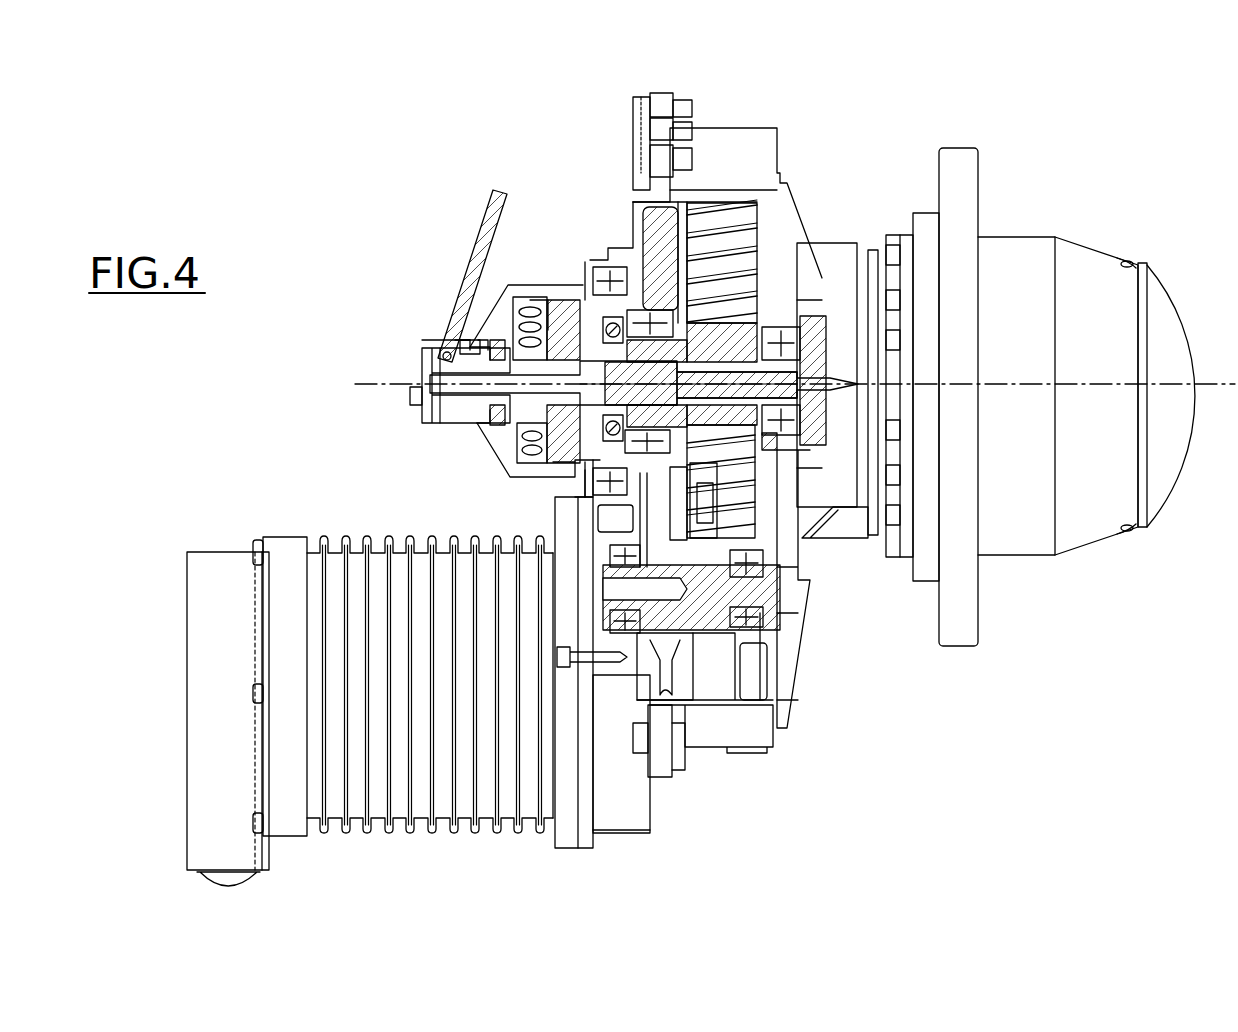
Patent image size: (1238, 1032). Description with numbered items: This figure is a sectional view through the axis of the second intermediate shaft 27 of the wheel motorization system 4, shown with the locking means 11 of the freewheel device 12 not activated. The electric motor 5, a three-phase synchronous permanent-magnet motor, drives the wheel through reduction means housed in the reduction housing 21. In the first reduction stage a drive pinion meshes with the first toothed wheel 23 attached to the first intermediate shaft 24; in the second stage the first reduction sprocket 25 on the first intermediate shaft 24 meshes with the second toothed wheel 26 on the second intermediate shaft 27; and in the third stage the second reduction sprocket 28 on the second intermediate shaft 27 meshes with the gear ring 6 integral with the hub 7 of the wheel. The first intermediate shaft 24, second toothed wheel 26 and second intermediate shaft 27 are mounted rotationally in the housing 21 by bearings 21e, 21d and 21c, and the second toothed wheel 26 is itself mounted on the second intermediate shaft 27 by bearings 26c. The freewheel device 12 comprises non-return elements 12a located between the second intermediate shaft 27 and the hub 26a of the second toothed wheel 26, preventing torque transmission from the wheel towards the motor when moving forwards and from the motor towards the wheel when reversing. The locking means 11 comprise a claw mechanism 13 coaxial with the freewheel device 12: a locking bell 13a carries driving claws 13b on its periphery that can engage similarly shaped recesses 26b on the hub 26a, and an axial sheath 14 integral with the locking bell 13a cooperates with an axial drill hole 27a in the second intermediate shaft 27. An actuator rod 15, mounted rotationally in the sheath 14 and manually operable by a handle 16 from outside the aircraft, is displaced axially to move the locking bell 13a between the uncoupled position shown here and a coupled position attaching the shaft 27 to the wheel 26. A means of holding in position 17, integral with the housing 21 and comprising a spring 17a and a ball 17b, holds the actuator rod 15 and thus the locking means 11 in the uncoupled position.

The wheel motorization system 4 is at (1011, 112).
The electric motor 5 is at (390, 838).
The gear ring 6 is at (738, 238).
The hub 7 is at (1045, 240).
The locking means 11 is at (421, 339).
The freewheel device 12 is at (540, 436).
The non-return elements 12a is at (573, 265).
The claw mechanism 13 is at (503, 322).
The locking bell 13a is at (470, 345).
The driving claws 13b is at (478, 345).
The axial sheath 14 is at (536, 300).
The actuator rod 15 is at (428, 372).
The handle 16 is at (500, 189).
The means of holding in position 17 is at (438, 405).
The spring 17a is at (510, 350).
The ball 17b is at (478, 345).
The reduction housing 21 is at (781, 172).
The bearing 21c is at (783, 333).
The bearing 21d is at (597, 500).
The bearing 21e is at (617, 632).
The first toothed wheel 23 is at (704, 678).
The first intermediate shaft 24 is at (727, 595).
The first reduction sprocket 25 is at (656, 642).
The second toothed wheel 26 is at (665, 223).
The hub 26a is at (585, 463).
The recesses 26b is at (553, 463).
The bearings 26c is at (645, 318).
The second intermediate shaft 27 is at (486, 410).
The axial drill hole 27a is at (607, 266).
The second reduction sprocket 28 is at (735, 412).